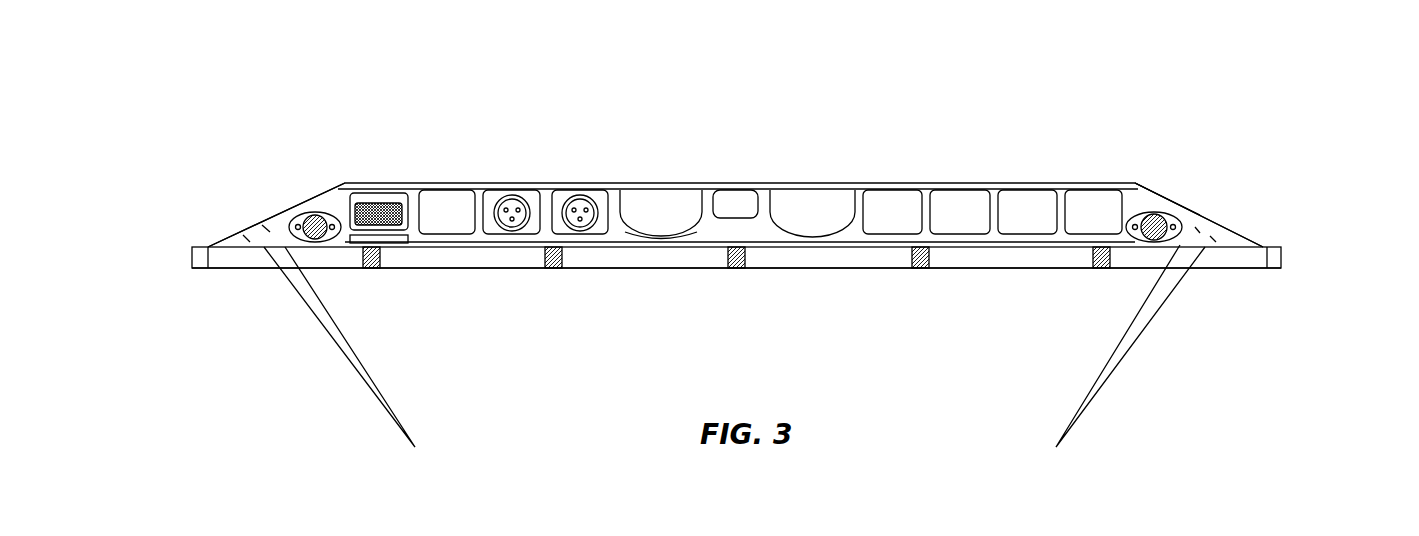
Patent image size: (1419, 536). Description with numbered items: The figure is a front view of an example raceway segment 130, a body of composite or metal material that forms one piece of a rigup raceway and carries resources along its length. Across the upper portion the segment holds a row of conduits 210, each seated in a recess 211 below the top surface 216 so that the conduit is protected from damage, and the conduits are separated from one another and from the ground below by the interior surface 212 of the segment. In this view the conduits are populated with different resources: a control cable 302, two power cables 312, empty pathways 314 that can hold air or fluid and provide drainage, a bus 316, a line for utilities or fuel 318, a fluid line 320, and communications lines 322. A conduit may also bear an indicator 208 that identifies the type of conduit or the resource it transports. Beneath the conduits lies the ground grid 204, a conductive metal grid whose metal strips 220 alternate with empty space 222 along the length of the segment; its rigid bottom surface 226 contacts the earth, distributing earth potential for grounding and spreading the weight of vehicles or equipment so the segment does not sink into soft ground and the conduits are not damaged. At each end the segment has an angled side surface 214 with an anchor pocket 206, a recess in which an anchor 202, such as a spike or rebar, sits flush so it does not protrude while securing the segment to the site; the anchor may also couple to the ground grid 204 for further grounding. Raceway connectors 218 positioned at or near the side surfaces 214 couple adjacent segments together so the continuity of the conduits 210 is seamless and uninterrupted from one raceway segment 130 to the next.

The raceway segment 130 is at (196, 72).
The anchor 202 is at (312, 322).
The ground grid 204 is at (190, 258).
The anchor pocket 206 is at (246, 228).
The indicator 208 is at (388, 245).
The conduit 210 is at (440, 200).
The recess 211 is at (413, 190).
The interior surface 212 is at (1153, 200).
The side surface 214 is at (280, 212).
The top surface 216 is at (660, 200).
The raceway connector 218 is at (316, 212).
The metal strip 220 is at (553, 270).
The empty space 222 is at (785, 257).
The bottom surface 226 is at (660, 268).
The control cable 302 is at (376, 200).
The power cable 312 is at (512, 195).
The empty pathway 314 is at (650, 192).
The bus 316 is at (735, 198).
The utilities or fuel 318 is at (893, 200).
The fluid line 320 is at (960, 200).
The communications line 322 is at (1028, 200).